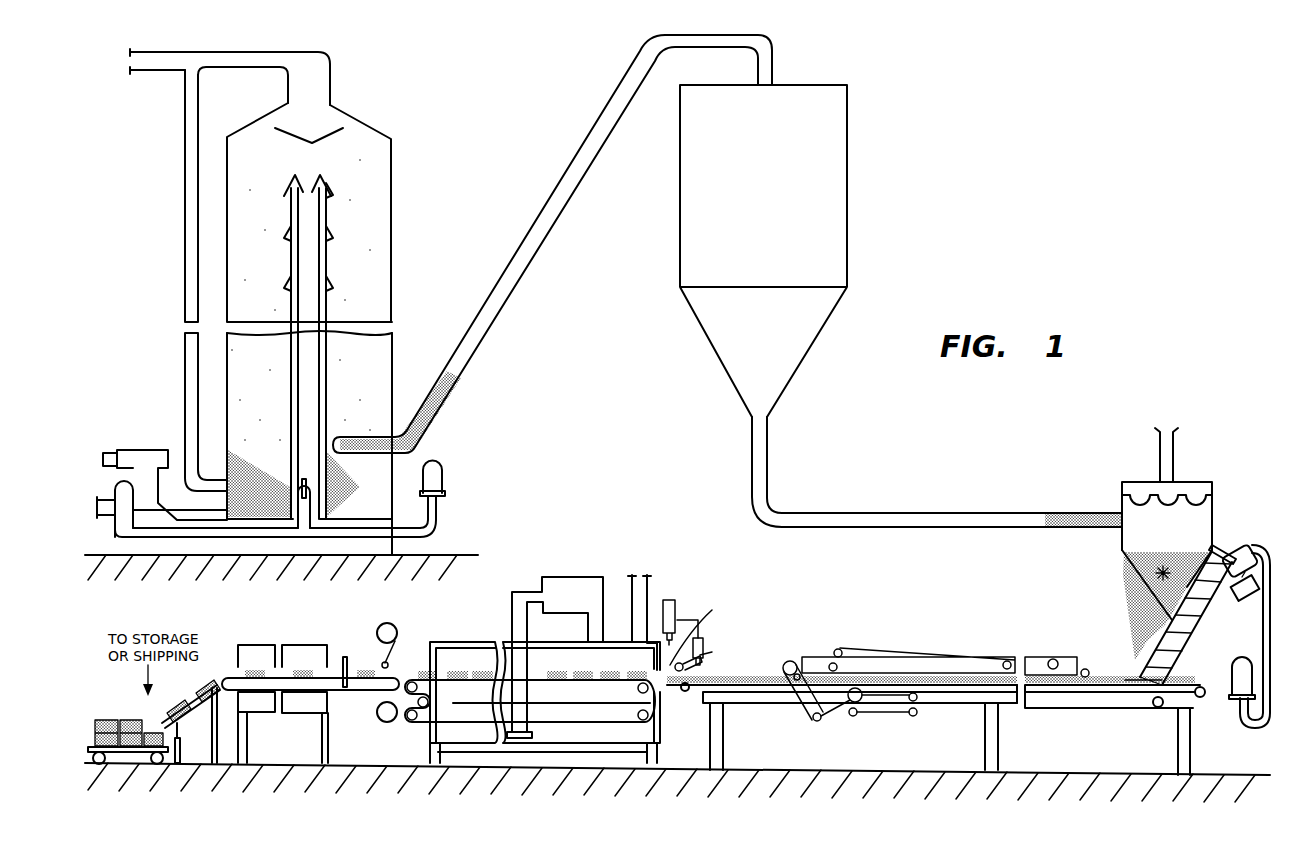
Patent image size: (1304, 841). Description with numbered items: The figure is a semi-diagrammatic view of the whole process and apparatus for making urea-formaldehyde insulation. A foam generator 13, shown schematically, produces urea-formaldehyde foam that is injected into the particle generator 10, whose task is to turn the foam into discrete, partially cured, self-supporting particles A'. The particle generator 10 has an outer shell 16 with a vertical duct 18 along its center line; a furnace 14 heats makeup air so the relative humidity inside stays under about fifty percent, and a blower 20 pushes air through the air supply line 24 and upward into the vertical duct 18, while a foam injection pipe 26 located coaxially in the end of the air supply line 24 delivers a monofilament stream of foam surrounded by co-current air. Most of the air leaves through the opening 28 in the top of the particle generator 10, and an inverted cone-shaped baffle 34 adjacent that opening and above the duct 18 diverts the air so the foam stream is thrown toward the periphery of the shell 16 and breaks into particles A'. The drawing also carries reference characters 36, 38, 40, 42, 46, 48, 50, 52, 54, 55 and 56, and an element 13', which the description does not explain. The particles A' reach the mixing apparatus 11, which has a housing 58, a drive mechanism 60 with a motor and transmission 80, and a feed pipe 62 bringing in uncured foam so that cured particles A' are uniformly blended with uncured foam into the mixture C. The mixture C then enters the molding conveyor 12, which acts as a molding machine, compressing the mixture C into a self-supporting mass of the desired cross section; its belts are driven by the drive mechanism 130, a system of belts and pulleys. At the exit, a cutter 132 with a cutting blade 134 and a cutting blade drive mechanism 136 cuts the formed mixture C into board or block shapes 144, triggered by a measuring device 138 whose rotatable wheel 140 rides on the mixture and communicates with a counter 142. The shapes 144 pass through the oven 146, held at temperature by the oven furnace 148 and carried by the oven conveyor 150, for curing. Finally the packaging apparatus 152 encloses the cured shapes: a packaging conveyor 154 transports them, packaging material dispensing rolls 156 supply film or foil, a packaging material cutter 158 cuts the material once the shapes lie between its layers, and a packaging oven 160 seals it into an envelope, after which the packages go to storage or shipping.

The particle generator 10 is at (405, 110).
The mixing apparatus 11 is at (1150, 652).
The molding conveyor 12 is at (928, 653).
The foam generator 13 is at (462, 490).
The sensor 13' is at (1220, 673).
The furnace 14 is at (157, 450).
The outer shell 16 is at (396, 180).
The vertical duct 18 is at (289, 400).
The blower 20 is at (123, 488).
The air supply line 24 is at (132, 537).
The foam injection pipe 26 is at (343, 537).
The opening 28 is at (303, 97).
The inverted cone-shaped baffle 34 is at (293, 143).
The recirculation pipe 36 is at (190, 218).
The supply pipe 38 is at (163, 56).
The settled material 40 is at (273, 487).
The spray nozzles 42 is at (288, 190).
The conveyor pipe 46 is at (500, 290).
The storage hopper 48 is at (822, 202).
The feed hopper 50 is at (1122, 549).
The feed pipe 52 is at (850, 517).
The vent 54 is at (1172, 456).
The hopper top 55 is at (1188, 497).
The level sensor 56 is at (1160, 574).
The housing 58 is at (1205, 595).
The drive mechanism 60 is at (1263, 553).
The feed pipe 62 is at (1230, 547).
The motor and transmission 80 is at (1253, 598).
The drive mechanism 130 is at (853, 716).
The cutter 132 is at (670, 597).
The cutting blade 134 is at (696, 628).
The cutting blade drive mechanism 136 is at (678, 603).
The measuring device 138 is at (710, 658).
The rotatable wheel 140 is at (690, 669).
The counter 142 is at (705, 645).
The board or block shapes 144 is at (583, 671).
The oven 146 is at (468, 642).
The oven furnace 148 is at (575, 595).
The oven conveyor 150 is at (423, 722).
The packaging apparatus 152 is at (305, 638).
The packaging conveyor 154 is at (378, 686).
The packaging material dispensing rolls 156 is at (391, 628).
The packaging material cutter 158 is at (345, 655).
The packaging oven 160 is at (250, 645).
The discrete particles A' is at (745, 480).
The mixture C is at (765, 680).